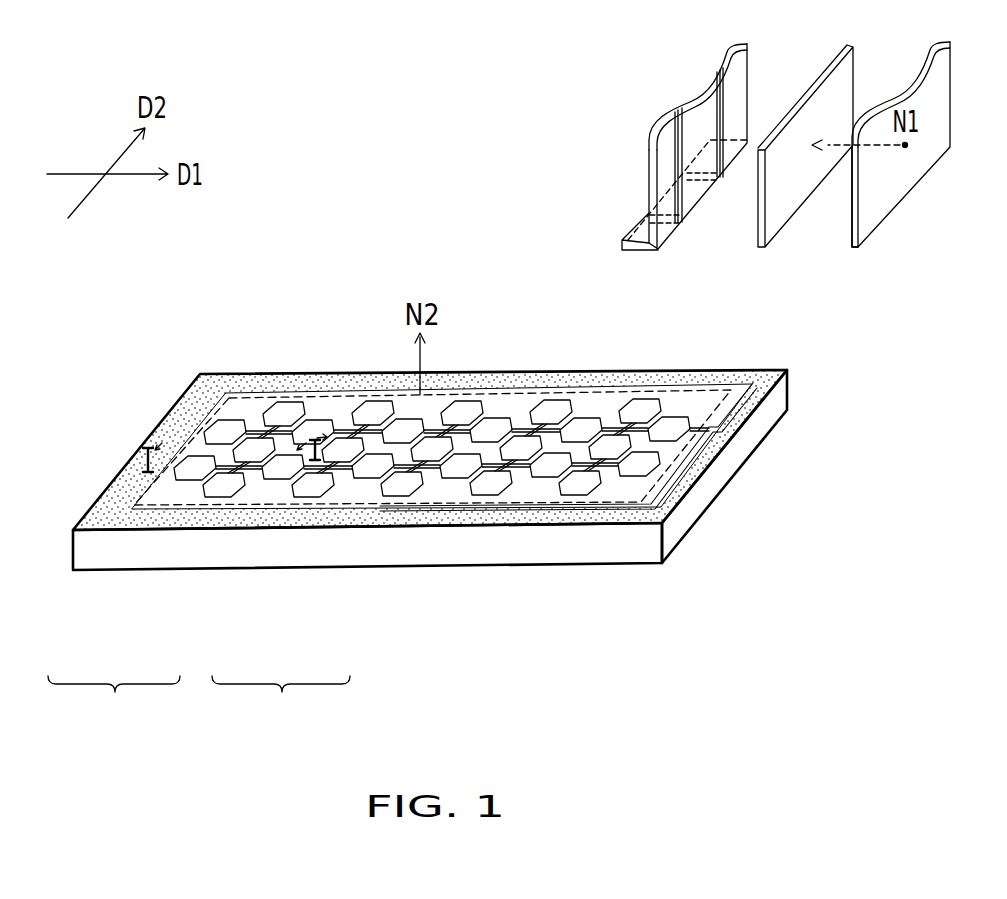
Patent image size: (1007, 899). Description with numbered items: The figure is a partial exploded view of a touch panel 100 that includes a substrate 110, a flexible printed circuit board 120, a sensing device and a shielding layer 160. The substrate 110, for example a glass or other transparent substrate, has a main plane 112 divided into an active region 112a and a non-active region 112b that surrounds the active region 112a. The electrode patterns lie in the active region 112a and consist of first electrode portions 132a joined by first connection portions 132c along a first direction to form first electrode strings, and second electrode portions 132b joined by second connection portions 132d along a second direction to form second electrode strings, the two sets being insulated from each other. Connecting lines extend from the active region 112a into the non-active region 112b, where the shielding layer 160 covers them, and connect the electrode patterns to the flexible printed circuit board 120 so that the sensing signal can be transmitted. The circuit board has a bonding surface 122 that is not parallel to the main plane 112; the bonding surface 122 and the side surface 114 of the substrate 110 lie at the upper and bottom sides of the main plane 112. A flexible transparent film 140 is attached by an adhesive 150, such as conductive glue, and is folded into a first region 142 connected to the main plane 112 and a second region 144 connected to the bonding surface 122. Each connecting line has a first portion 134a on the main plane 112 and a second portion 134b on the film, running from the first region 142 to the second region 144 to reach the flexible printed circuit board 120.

The touch panel 100 is at (708, 631).
The substrate 110 is at (820, 352).
The main plane 112 is at (228, 310).
The active region 112a is at (280, 396).
The non-active region 112b is at (252, 374).
The side surface 114 is at (737, 453).
The flexible printed circuit board 120 is at (882, 194).
The bonding surface 122 is at (852, 219).
The first electrode portions 132a is at (185, 475).
The second electrode portions 132b is at (223, 492).
The first connection portions 132c is at (215, 473).
The second connection portions 132d is at (247, 473).
The first portion 134a is at (672, 478).
The second portion 134b is at (671, 233).
The flexible transparent film 140 is at (553, 52).
The first region 142 is at (628, 233).
The second region 144 is at (697, 100).
The adhesive 150 is at (762, 221).
The shielding layer 160 is at (187, 408).